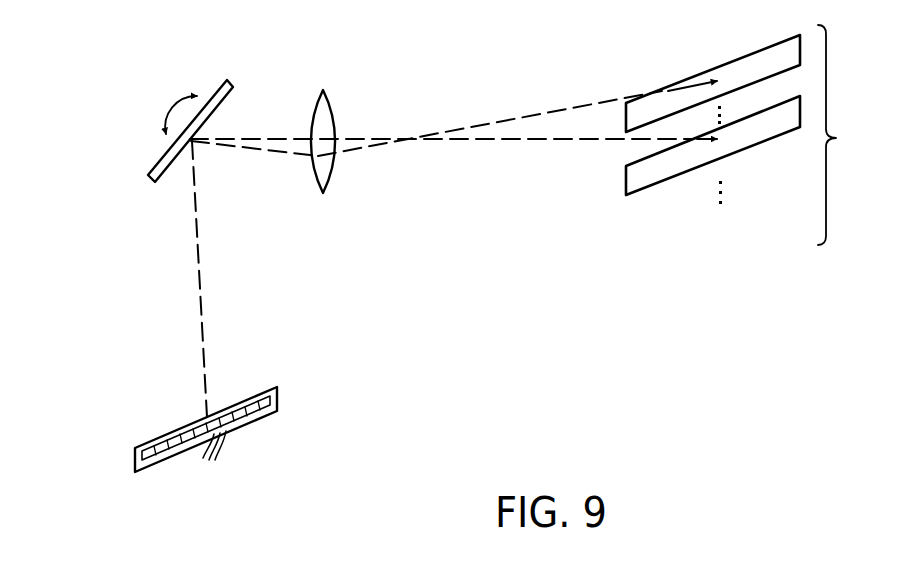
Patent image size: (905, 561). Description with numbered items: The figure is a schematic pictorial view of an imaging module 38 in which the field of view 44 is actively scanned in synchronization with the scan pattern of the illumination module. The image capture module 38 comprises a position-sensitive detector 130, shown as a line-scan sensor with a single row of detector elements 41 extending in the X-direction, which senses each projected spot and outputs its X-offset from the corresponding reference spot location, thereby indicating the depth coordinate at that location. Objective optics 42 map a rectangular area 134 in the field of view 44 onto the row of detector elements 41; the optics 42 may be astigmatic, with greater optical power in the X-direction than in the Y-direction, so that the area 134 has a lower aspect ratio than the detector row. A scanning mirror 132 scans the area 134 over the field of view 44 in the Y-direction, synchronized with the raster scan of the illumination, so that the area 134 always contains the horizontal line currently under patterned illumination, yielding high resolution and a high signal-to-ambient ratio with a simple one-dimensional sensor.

The imaging module 38 is at (114, 84).
The scanning mirror 132 is at (233, 84).
The objective optics 42 is at (351, 160).
The field of view 44 is at (793, 135).
The rectangular area 134 is at (625, 117).
The position-sensitive detector 130 is at (278, 388).
The detector elements 41 is at (218, 459).